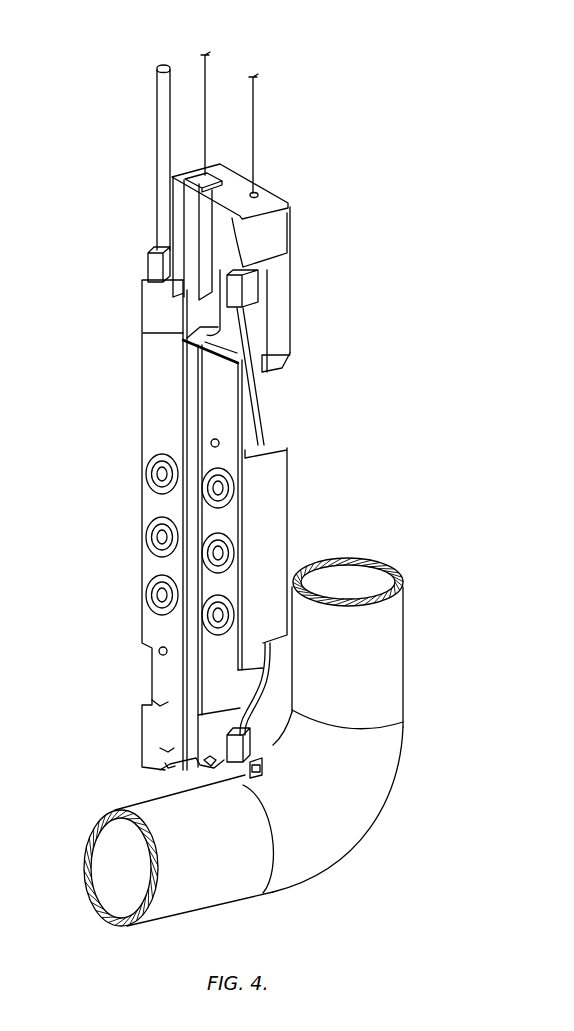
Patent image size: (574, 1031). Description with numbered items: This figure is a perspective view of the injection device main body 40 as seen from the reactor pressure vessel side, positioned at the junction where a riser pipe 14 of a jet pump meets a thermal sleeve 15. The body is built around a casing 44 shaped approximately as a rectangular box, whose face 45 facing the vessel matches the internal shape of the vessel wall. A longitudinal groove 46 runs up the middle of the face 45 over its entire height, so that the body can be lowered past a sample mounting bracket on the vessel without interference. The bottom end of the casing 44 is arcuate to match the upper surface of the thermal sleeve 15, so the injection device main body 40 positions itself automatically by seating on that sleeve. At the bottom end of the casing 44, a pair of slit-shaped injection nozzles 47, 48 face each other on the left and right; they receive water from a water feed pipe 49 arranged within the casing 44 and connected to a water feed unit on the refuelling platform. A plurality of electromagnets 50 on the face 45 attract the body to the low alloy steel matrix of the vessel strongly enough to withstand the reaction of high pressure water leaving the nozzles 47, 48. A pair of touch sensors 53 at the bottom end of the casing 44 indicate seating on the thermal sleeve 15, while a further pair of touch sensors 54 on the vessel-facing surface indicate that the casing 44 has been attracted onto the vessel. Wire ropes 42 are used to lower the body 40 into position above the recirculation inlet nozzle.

The riser pipe 14 is at (384, 668).
The thermal sleeve 15 is at (245, 866).
The injection device main body 40 is at (312, 298).
The wire ropes 42 is at (253, 88).
The casing 44 is at (288, 527).
The face 45 is at (152, 373).
The longitudinal groove 46 is at (186, 670).
The injection nozzle 47 is at (160, 748).
The injection nozzle 48 is at (208, 762).
The water feed pipe 49 is at (158, 106).
The electromagnets 50 is at (148, 530).
The touch sensors 53 is at (166, 766).
The touch sensors 54 is at (220, 440).